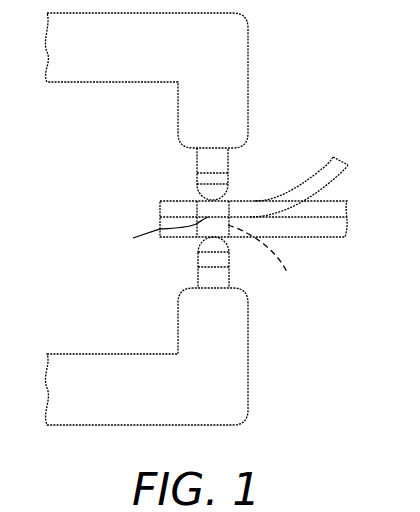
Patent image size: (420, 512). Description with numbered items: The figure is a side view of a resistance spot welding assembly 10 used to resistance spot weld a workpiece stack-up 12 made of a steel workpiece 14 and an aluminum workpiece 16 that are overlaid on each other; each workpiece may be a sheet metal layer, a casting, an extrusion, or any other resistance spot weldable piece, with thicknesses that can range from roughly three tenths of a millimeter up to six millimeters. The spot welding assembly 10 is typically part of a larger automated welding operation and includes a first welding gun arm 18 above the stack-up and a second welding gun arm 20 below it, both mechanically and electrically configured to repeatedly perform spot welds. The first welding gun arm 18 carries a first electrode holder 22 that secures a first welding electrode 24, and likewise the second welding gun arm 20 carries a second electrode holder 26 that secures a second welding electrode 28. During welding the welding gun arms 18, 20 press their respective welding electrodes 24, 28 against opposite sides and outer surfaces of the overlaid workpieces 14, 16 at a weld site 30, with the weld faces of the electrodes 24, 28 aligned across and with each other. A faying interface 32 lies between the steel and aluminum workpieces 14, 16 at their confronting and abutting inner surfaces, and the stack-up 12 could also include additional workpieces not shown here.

The resistance spot welding assembly 10 is at (348, 88).
The workpiece stack-up 12 is at (160, 216).
The steel workpiece 14 is at (316, 173).
The aluminum workpiece 16 is at (333, 227).
The first welding gun arm 18 is at (248, 52).
The second welding gun arm 20 is at (248, 352).
The first electrode holder 22 is at (208, 165).
The first welding electrode 24 is at (207, 195).
The second electrode holder 26 is at (208, 277).
The second welding electrode 28 is at (198, 245).
The weld site 30 is at (268, 259).
The faying interface 32 is at (157, 237).